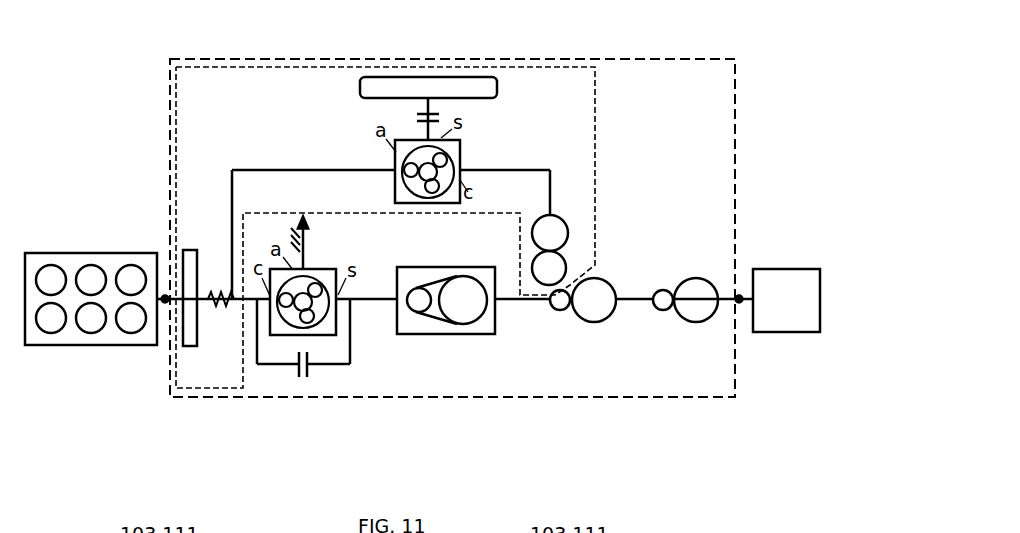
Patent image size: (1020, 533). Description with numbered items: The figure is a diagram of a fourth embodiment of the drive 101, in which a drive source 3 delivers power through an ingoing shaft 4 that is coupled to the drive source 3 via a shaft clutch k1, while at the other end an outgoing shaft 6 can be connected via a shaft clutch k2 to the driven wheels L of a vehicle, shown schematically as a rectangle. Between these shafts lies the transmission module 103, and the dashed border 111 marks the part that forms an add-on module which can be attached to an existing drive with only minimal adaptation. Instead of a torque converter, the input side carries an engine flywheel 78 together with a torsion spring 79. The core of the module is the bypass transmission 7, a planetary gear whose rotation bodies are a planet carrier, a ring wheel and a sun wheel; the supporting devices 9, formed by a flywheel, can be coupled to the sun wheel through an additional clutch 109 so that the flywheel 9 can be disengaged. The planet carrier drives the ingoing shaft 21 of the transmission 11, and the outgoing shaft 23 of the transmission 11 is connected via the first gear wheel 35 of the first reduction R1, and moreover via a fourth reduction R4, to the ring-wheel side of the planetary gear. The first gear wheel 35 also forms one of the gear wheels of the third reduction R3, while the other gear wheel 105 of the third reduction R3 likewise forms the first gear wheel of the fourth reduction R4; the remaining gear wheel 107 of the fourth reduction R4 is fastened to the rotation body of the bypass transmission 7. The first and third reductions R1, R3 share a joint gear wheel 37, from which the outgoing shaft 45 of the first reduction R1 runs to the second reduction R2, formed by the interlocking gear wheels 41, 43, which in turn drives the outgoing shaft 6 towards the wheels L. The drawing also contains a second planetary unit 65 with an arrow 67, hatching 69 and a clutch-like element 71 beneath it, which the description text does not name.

The drive 101 is at (130, 96).
The border 111 is at (245, 65).
The transmission module 103 is at (368, 58).
The drive source 3 is at (83, 253).
The ingoing shaft 4 is at (171, 308).
The outgoing shaft 6 is at (732, 305).
The bypass transmission 7 is at (418, 205).
The supporting devices 9 is at (447, 84).
The transmission 11 is at (448, 336).
The ingoing shaft 21 is at (384, 306).
The outgoing shaft 23 is at (514, 306).
The first gear wheel 35 is at (559, 309).
The joint gear wheel 37 is at (592, 306).
The gear wheel 41 is at (664, 295).
The gear wheel 43 is at (693, 306).
The outgoing shaft 45 is at (635, 302).
The planetary gear set 65 is at (338, 268).
The brake 67 is at (307, 222).
The brake housing 69 is at (294, 240).
The clutch 71 is at (300, 392).
The engine flywheel 78 is at (190, 249).
The torsion spring 79 is at (216, 292).
The gear wheel 105 is at (545, 270).
The gear wheel 107 is at (553, 229).
The clutch 109 is at (416, 117).
The first reduction R1 is at (566, 328).
The second reduction R2 is at (664, 328).
The third reduction R3 is at (583, 274).
The fourth reduction R4 is at (578, 242).
The shaft clutch k1 is at (165, 294).
The shaft clutch k2 is at (740, 294).
The driven wheels L is at (786, 300).